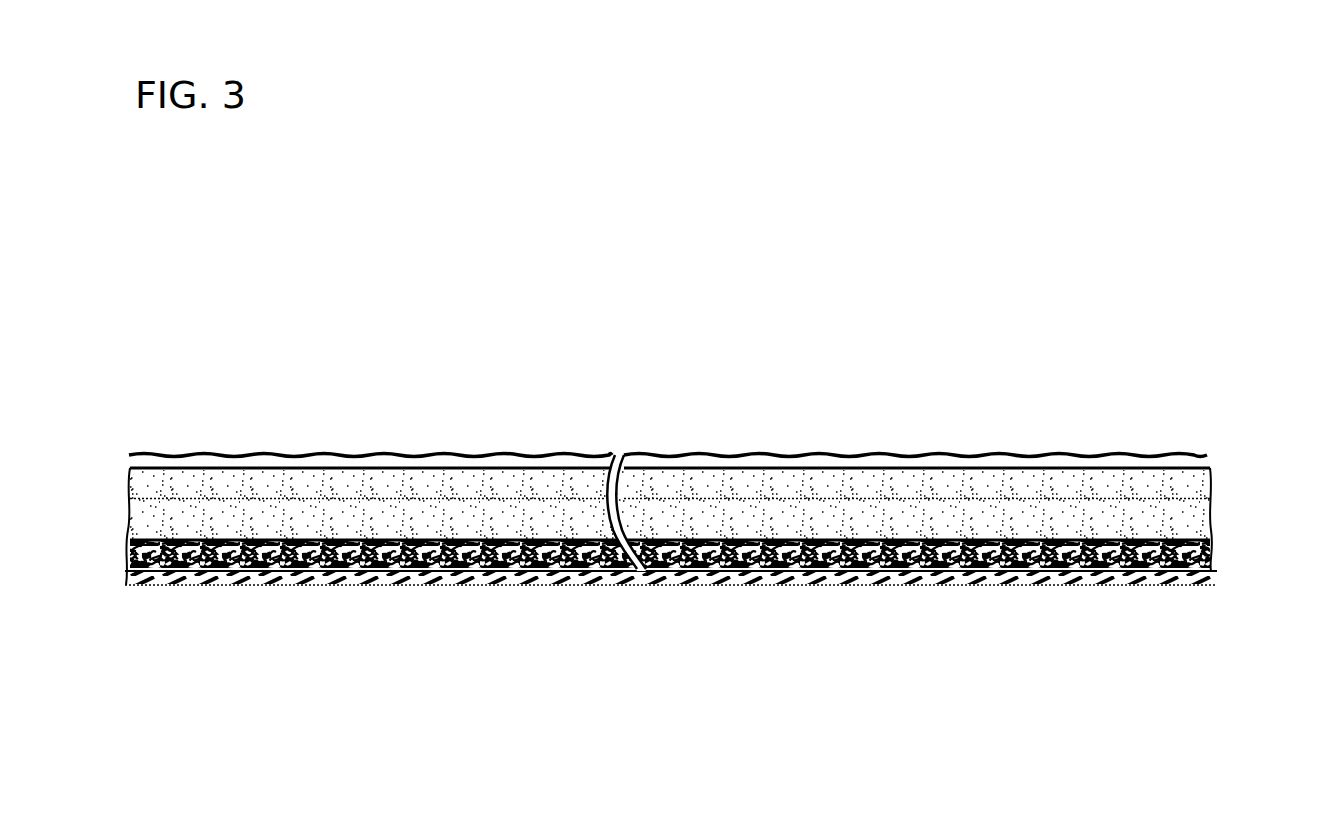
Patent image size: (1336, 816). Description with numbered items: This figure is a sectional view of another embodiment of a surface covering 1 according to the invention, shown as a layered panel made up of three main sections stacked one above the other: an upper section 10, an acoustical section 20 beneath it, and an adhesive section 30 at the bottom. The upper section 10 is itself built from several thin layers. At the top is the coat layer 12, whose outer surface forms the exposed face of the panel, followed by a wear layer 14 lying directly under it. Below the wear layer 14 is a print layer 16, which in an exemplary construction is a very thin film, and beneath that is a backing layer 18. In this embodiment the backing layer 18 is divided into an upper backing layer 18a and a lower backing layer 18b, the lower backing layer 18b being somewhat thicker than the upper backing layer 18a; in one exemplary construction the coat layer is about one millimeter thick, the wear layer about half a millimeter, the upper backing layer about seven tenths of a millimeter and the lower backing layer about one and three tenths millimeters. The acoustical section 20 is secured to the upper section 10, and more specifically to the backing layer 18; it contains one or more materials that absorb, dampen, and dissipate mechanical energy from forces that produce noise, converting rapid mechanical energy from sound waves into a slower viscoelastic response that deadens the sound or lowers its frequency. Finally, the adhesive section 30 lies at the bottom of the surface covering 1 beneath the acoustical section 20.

The surface covering 1 is at (710, 493).
The upper section 10 is at (1200, 459).
The coat layer 12 is at (223, 425).
The wear layer 14 is at (350, 455).
The print layer 16 is at (122, 480).
The backing layer 18 is at (730, 516).
The upper backing layer 18a is at (1015, 487).
The lower backing layer 18b is at (1045, 520).
The acoustical section 20 is at (1213, 558).
The adhesive section 30 is at (974, 595).